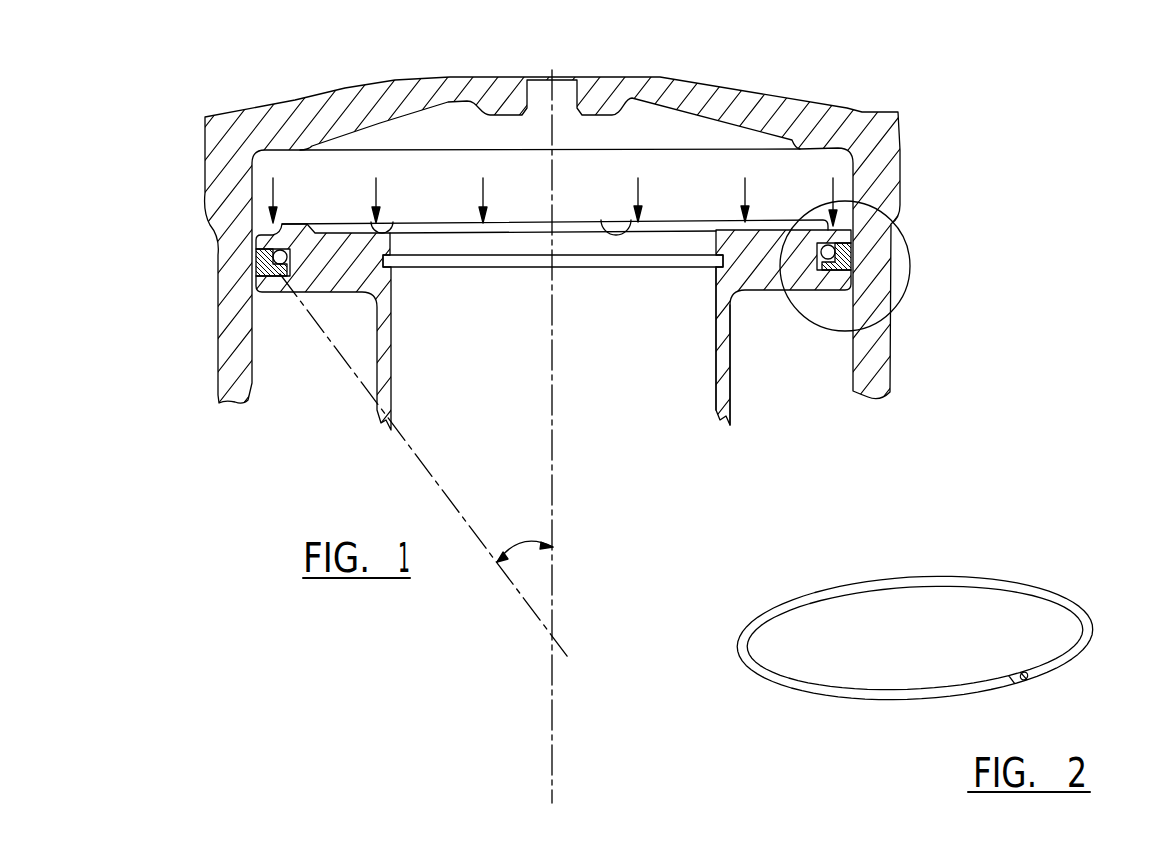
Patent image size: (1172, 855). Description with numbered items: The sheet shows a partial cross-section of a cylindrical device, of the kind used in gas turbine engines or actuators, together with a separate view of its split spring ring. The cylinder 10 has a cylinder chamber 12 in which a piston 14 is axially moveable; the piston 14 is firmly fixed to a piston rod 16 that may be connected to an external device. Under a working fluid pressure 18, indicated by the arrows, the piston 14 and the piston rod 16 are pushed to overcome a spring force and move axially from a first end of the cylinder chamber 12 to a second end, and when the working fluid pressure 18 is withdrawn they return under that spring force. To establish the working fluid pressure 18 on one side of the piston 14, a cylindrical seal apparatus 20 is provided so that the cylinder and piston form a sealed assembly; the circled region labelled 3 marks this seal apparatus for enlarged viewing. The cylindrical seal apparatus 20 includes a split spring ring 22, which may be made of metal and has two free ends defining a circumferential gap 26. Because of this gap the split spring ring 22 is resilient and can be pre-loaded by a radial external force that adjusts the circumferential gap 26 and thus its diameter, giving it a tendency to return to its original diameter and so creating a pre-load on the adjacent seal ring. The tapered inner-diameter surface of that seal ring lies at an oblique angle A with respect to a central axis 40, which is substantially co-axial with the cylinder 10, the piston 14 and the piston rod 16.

In FIG. 1, the cylinder 10 is at (873, 112).
In FIG. 1, the cylinder chamber 12 is at (604, 195).
In FIG. 1, the piston 14 is at (755, 291).
In FIG. 1, the piston rod 16 is at (735, 394).
In FIG. 1, the working fluid pressure 18 is at (274, 188).
In FIG. 1, the cylindrical seal apparatus 20 is at (850, 266).
In FIG. 1, the detail view circle 3 is at (910, 263).
In FIG. 2, the split spring ring 22 is at (1020, 590).
In FIG. 2, the circumferential gap 26 is at (1022, 686).
In FIG. 1, the central axis 40 is at (556, 690).
In FIG. 1, the oblique angle A is at (425, 467).